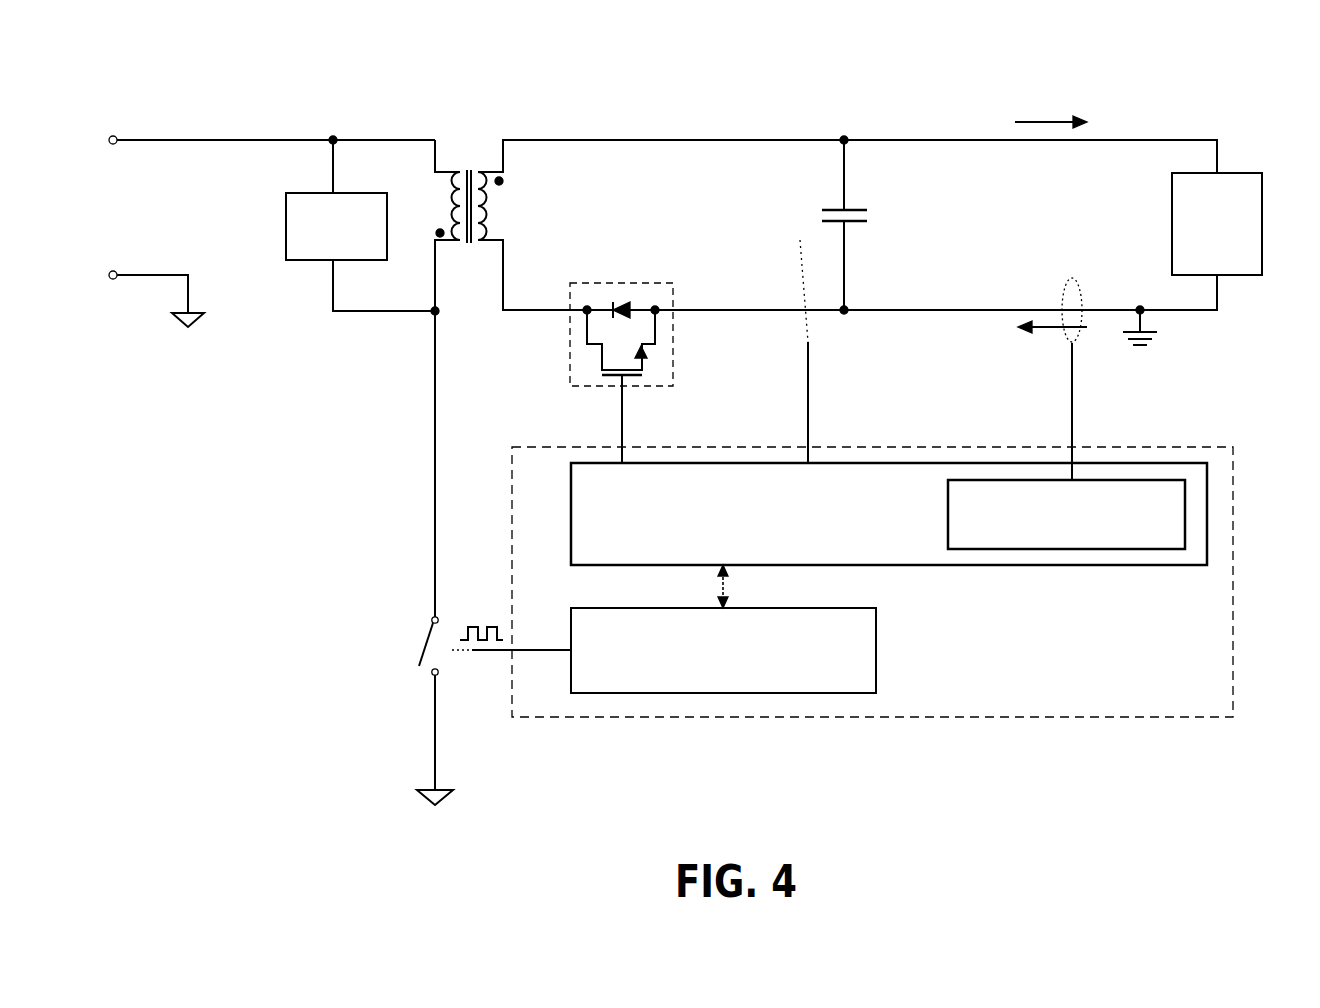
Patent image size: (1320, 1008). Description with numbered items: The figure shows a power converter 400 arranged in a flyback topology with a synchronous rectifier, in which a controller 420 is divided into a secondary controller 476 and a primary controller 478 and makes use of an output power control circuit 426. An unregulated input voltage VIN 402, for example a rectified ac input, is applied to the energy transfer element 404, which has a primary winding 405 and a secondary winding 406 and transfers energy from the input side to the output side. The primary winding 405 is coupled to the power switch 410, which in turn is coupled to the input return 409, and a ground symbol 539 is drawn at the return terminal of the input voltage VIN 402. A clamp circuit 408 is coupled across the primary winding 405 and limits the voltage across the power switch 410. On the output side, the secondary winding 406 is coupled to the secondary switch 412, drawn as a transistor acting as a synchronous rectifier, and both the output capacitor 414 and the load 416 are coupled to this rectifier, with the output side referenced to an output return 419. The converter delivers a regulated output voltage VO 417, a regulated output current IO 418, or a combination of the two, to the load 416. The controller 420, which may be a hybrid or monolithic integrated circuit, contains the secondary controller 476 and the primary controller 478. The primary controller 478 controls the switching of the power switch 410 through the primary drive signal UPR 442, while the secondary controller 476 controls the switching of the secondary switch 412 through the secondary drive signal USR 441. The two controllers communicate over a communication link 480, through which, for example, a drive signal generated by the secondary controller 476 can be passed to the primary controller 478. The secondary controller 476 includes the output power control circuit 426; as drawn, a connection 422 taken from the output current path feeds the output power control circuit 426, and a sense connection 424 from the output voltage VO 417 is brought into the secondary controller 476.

The power converter 400 is at (1285, 56).
The input voltage VIN 402 is at (192, 174).
The energy transfer element 404 is at (470, 166).
The primary winding 405 is at (433, 188).
The secondary winding 406 is at (510, 200).
The clamp circuit 408 is at (306, 270).
The input return 409 is at (418, 796).
The power switch S1 410 is at (398, 660).
The secondary switch 412 is at (609, 282).
The output capacitor C1 414 is at (915, 215).
The load 416 is at (1245, 168).
The output voltage VO 417 is at (765, 222).
The output current IO 418 is at (1065, 97).
The output return / ground 419 is at (1165, 346).
The controller 420 is at (1097, 720).
The output current sense signal 422 is at (1085, 421).
The output voltage sense signal 424 is at (805, 392).
The output power control circuit 426 is at (1080, 552).
The secondary drive signal USR 441 is at (608, 424).
The primary drive signal UPR 442 is at (480, 695).
The secondary controller 476 is at (925, 568).
The primary controller 478 is at (882, 655).
The communication link 480 is at (710, 590).
The input ground 539 is at (200, 312).